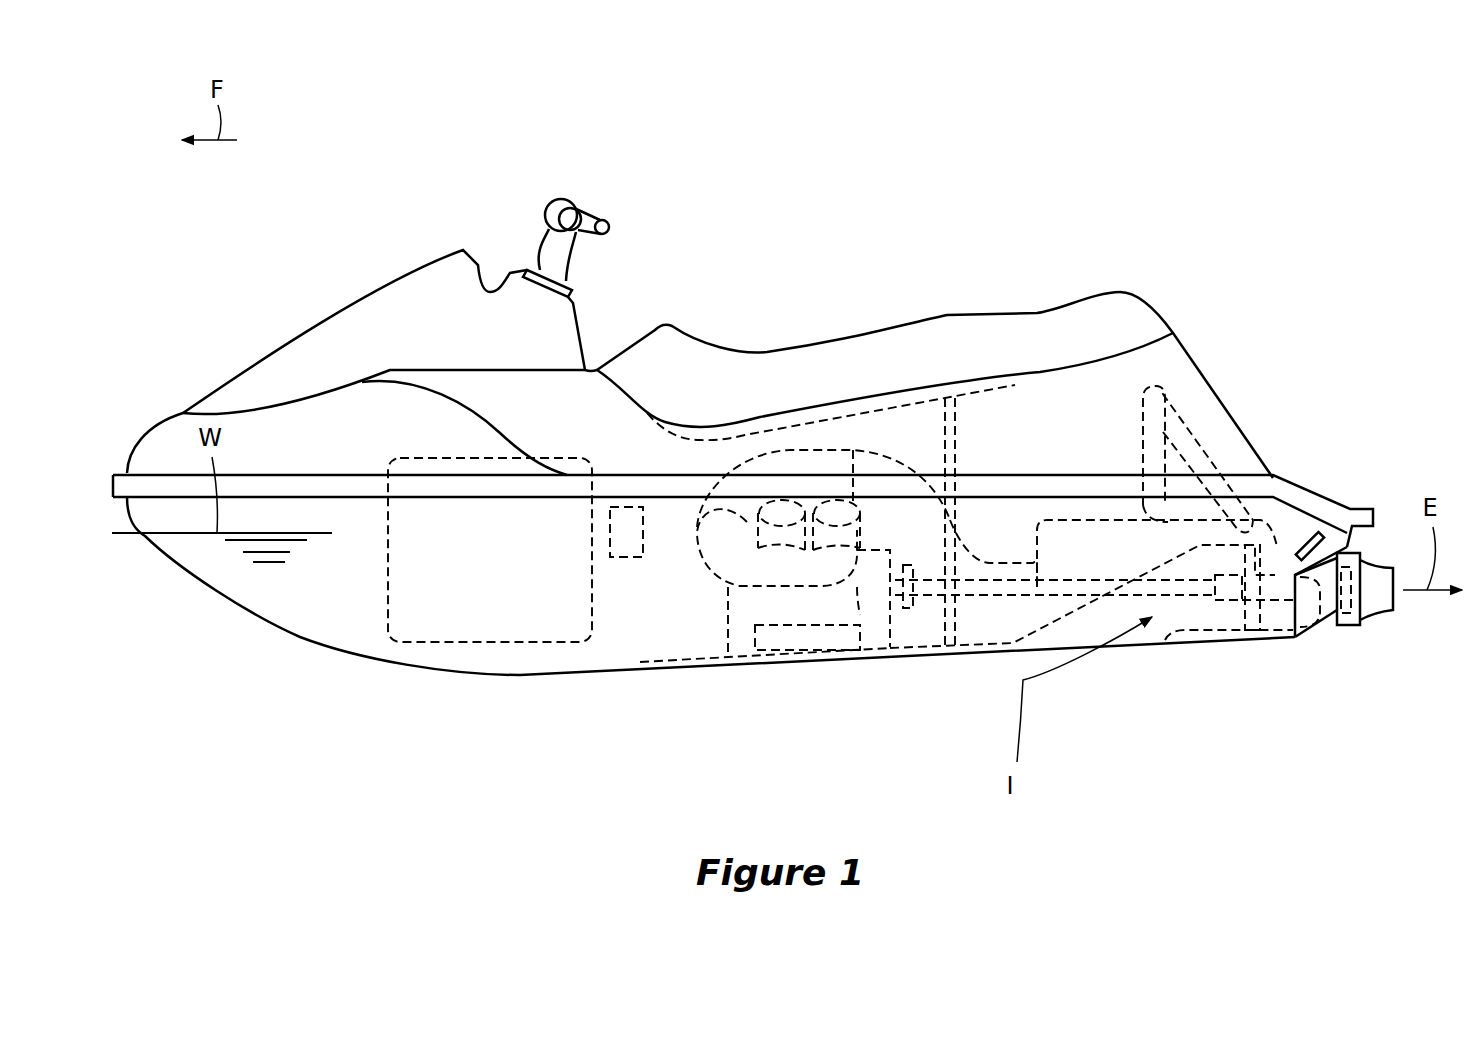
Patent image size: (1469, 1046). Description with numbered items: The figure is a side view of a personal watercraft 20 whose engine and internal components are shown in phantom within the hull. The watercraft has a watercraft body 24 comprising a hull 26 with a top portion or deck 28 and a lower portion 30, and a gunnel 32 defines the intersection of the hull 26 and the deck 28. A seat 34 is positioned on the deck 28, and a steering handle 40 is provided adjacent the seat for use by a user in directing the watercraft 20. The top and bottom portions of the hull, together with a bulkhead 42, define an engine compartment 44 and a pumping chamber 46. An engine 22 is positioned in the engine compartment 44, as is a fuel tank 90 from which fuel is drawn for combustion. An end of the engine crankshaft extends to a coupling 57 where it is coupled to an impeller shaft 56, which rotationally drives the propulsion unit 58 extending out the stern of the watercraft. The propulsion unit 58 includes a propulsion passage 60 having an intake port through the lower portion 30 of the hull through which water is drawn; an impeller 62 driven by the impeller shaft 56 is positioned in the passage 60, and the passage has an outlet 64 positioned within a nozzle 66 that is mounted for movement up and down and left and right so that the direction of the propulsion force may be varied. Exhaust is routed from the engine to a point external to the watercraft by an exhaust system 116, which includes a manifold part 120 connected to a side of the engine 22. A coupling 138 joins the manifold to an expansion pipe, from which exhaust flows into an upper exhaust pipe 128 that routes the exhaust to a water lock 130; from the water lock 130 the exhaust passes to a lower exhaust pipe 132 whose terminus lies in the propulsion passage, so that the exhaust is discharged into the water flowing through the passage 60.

The watercraft 20 is at (1240, 246).
The engine 22 is at (773, 640).
The watercraft body 24 is at (1280, 351).
The hull 26 is at (270, 599).
The deck 28 is at (615, 410).
The lower portion 30 is at (608, 643).
The gunnel 32 is at (650, 477).
The seat 34 is at (908, 353).
The steering handle 40 is at (540, 236).
The bulkhead 42 is at (960, 487).
The engine compartment 44 is at (566, 665).
The pumping chamber 46 is at (1040, 420).
The impeller shaft 56 is at (985, 597).
The coupling 57 is at (908, 613).
The propulsion unit 58 is at (1203, 643).
The propulsion passage 60 is at (1163, 623).
The impeller 62 is at (1267, 612).
The outlet 64 is at (1318, 610).
The nozzle 66 is at (1377, 603).
The fuel tank 90 is at (455, 643).
The exhaust system 116 is at (791, 444).
The manifold part 120 is at (807, 590).
The upper exhaust pipe 128 is at (995, 563).
The water lock 130 is at (1090, 520).
The lower exhaust pipe 132 is at (1217, 442).
The coupling 138 is at (718, 515).